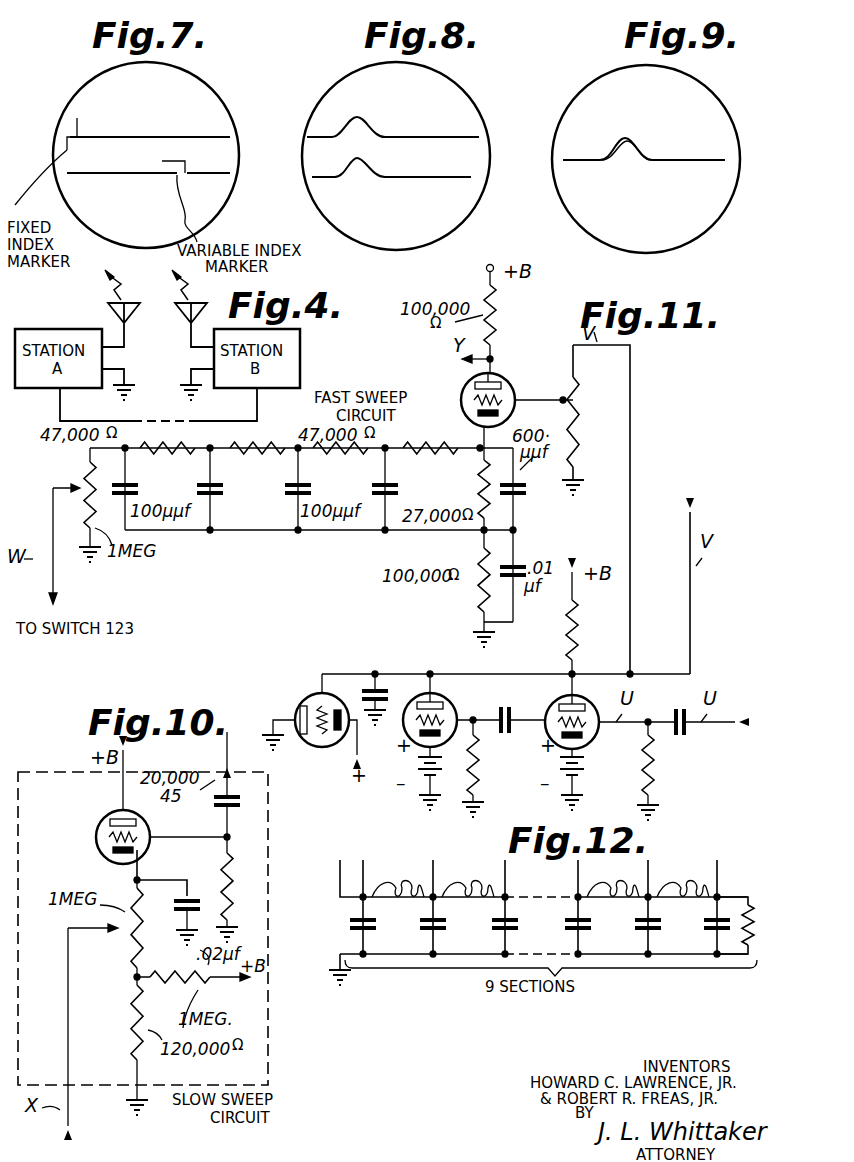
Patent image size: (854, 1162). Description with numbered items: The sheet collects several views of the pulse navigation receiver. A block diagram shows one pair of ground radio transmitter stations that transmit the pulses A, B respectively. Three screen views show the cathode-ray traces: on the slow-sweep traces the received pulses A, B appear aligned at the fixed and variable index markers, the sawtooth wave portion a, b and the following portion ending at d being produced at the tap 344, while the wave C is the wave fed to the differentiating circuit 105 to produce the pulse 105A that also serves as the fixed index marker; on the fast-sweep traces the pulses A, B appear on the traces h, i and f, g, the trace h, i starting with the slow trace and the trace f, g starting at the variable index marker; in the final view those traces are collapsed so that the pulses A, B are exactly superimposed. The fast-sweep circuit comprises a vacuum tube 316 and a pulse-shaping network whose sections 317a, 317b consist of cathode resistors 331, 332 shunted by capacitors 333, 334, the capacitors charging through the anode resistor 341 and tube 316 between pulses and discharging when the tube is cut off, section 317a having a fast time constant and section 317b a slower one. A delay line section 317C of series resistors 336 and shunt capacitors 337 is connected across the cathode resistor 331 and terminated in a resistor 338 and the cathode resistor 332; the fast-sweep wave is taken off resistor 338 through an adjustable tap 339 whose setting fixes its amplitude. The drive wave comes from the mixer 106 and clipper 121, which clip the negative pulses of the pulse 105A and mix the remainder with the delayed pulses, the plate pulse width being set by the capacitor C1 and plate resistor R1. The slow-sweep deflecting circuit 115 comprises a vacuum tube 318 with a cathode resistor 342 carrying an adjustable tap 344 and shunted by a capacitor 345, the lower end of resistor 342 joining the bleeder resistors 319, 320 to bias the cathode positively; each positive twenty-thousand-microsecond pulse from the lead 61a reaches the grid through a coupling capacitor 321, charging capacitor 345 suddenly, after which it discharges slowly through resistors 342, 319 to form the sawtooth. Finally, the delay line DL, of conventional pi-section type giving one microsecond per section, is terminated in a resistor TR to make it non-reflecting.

In FIG. 7, the A pulse A is at (77, 118).
In FIG. 8, the A pulse A is at (368, 126).
In FIG. 9, the A pulse A is at (632, 160).
In FIG. 7, the B pulse B is at (166, 157).
In FIG. 8, the B pulse B is at (373, 167).
In FIG. 9, the B pulse B is at (644, 146).
In FIG. 7, the wave C is at (66, 137).
In FIG. 11, the wave C is at (516, 708).
In FIG. 7, the slow-sweep sawtooth wave portion start point a is at (72, 175).
In FIG. 7, the slow-sweep sawtooth wave portion end point b is at (229, 176).
In FIG. 7, the sawtooth wave portion end point d is at (230, 137).
In FIG. 8, the fast-sweep trace start point f is at (314, 180).
In FIG. 9, the fast-sweep trace start point f is at (571, 156).
In FIG. 8, the fast-sweep trace end point g is at (468, 180).
In FIG. 9, the fast-sweep trace end point g is at (714, 147).
In FIG. 8, the fast-sweep trace start point h is at (322, 134).
In FIG. 8, the fast-sweep trace end point i is at (470, 135).
In FIG. 4, the series resistors 336 is at (438, 448).
In FIG. 4, the shunt capacitors 337 is at (328, 489).
In FIG. 4, the terminating resistor 338 is at (88, 466).
In FIG. 4, the adjustable tap 339 is at (73, 493).
In FIG. 4, the delay line section 317C is at (275, 508).
In FIG. 11, the anode resistor 341 is at (498, 318).
In FIG. 11, the vacuum tube 316 is at (512, 386).
In FIG. 11, the cathode resistor 331 is at (490, 462).
In FIG. 11, the cathode resistor 332 is at (482, 560).
In FIG. 11, the capacitor 333 is at (526, 494).
In FIG. 11, the capacitor 334 is at (508, 580).
In FIG. 11, the network section 317a is at (580, 534).
In FIG. 11, the network section 317b is at (542, 652).
In FIG. 11, the plate resistor R1 is at (580, 636).
In FIG. 11, the clipper 121 is at (398, 668).
In FIG. 11, the capacitor C1 is at (362, 690).
In FIG. 11, the pulse 105A is at (462, 705).
In FIG. 11, the differentiating circuit 105 is at (480, 788).
In FIG. 11, the mixer 106 is at (532, 742).
In FIG. 10, the vacuum tube 318 is at (107, 812).
In FIG. 10, the lead 61a is at (222, 766).
In FIG. 10, the coupling capacitor 321 is at (240, 797).
In FIG. 10, the slow-sweep deflecting circuit 115 is at (270, 848).
In FIG. 10, the capacitor 345 is at (190, 896).
In FIG. 10, the cathode resistor 342 is at (130, 895).
In FIG. 10, the adjustable tap 344 is at (122, 932).
In FIG. 10, the bleeder resistor 319 is at (128, 1003).
In FIG. 10, the bleeder resistor 320 is at (200, 990).
In FIG. 12, the delay line DL is at (465, 942).
In FIG. 12, the terminating resistor TR is at (755, 938).